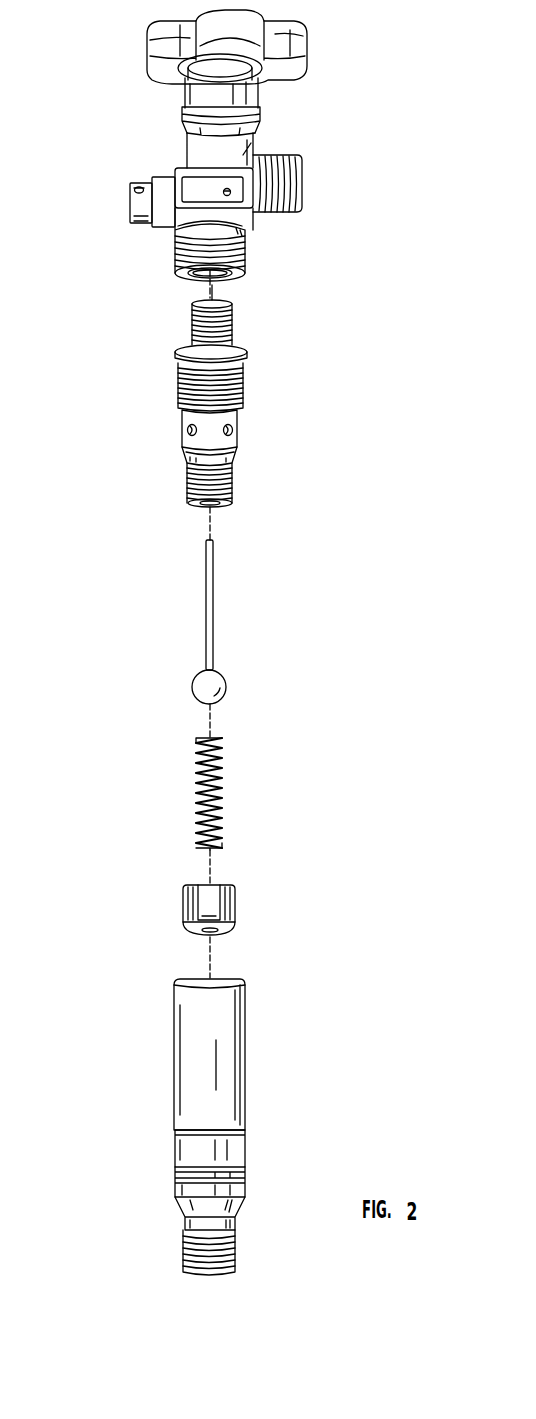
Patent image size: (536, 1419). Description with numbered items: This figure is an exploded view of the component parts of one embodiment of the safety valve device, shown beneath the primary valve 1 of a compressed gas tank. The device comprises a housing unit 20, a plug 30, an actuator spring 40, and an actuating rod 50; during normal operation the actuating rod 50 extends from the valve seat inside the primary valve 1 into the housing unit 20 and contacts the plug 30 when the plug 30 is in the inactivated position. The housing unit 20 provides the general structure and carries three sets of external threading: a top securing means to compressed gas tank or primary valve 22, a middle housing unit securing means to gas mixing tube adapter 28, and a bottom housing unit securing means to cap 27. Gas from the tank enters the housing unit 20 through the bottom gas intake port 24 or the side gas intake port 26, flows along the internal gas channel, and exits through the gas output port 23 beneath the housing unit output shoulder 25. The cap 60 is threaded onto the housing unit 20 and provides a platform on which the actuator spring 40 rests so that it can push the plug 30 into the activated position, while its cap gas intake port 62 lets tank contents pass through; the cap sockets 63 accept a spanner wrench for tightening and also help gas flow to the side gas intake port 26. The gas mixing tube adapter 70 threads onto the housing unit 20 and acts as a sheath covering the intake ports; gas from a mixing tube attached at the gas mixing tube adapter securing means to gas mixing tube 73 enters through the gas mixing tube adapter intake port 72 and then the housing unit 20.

The primary valve 1 is at (325, 15).
The housing unit 20 is at (210, 387).
The securing means to compressed gas tank or primary valve 22 is at (193, 310).
The gas output port 23 is at (224, 299).
The bottom gas intake port 24 is at (205, 509).
The housing unit output shoulder 25 is at (174, 349).
The side gas intake port 26 is at (181, 432).
The housing unit securing means to cap 27 is at (184, 493).
The housing unit securing means to gas mixing tube adapter 28 is at (176, 388).
The plug 30 is at (227, 689).
The actuator spring 40 is at (221, 789).
The actuating rod 50 is at (214, 610).
The cap 60 is at (216, 910).
The cap gas intake port 62 is at (201, 941).
The cap sockets 63 is at (183, 905).
The gas mixing tube adapter 70 is at (209, 1133).
The gas mixing tube adapter intake port 72 is at (197, 1277).
The gas mixing tube adapter securing means to gas mixing tube 73 is at (176, 1245).